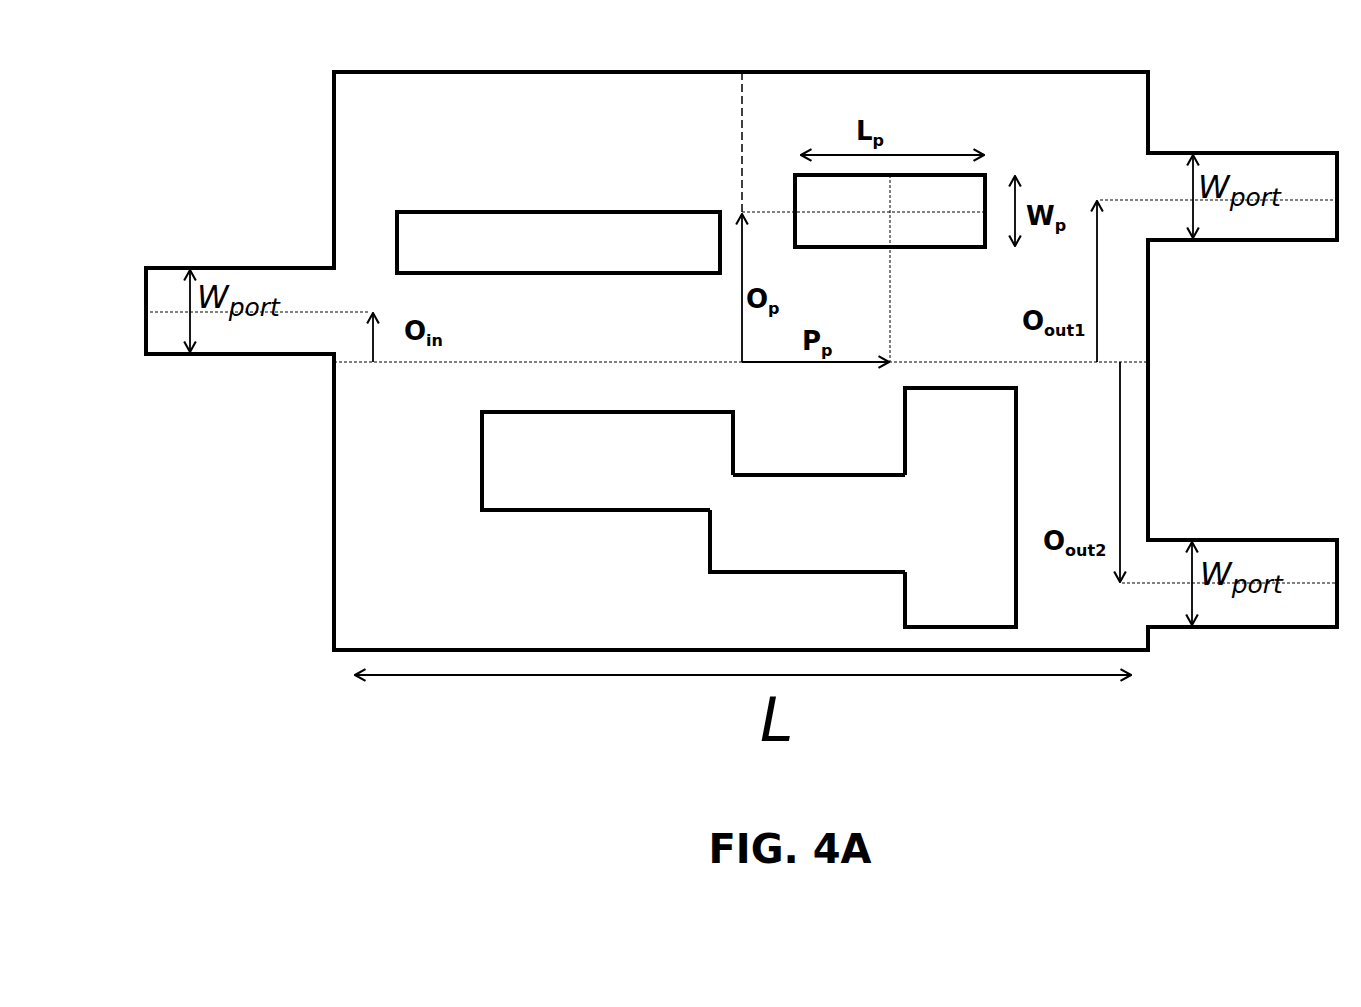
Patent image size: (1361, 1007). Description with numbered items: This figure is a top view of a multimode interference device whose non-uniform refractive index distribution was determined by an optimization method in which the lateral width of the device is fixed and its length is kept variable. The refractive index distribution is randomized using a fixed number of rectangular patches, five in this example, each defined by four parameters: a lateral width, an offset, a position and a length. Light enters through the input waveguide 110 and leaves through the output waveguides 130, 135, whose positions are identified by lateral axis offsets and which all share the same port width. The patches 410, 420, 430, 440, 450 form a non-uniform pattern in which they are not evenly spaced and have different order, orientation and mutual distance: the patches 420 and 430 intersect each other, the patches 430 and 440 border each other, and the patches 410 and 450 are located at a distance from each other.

The input waveguide 110 is at (222, 267).
The output waveguide 130 is at (1218, 153).
The output waveguide 135 is at (1218, 540).
The patch 410 is at (558, 242).
The patch 420 is at (607, 461).
The patch 430 is at (807, 523).
The patch 440 is at (960, 507).
The patch 450 is at (890, 211).